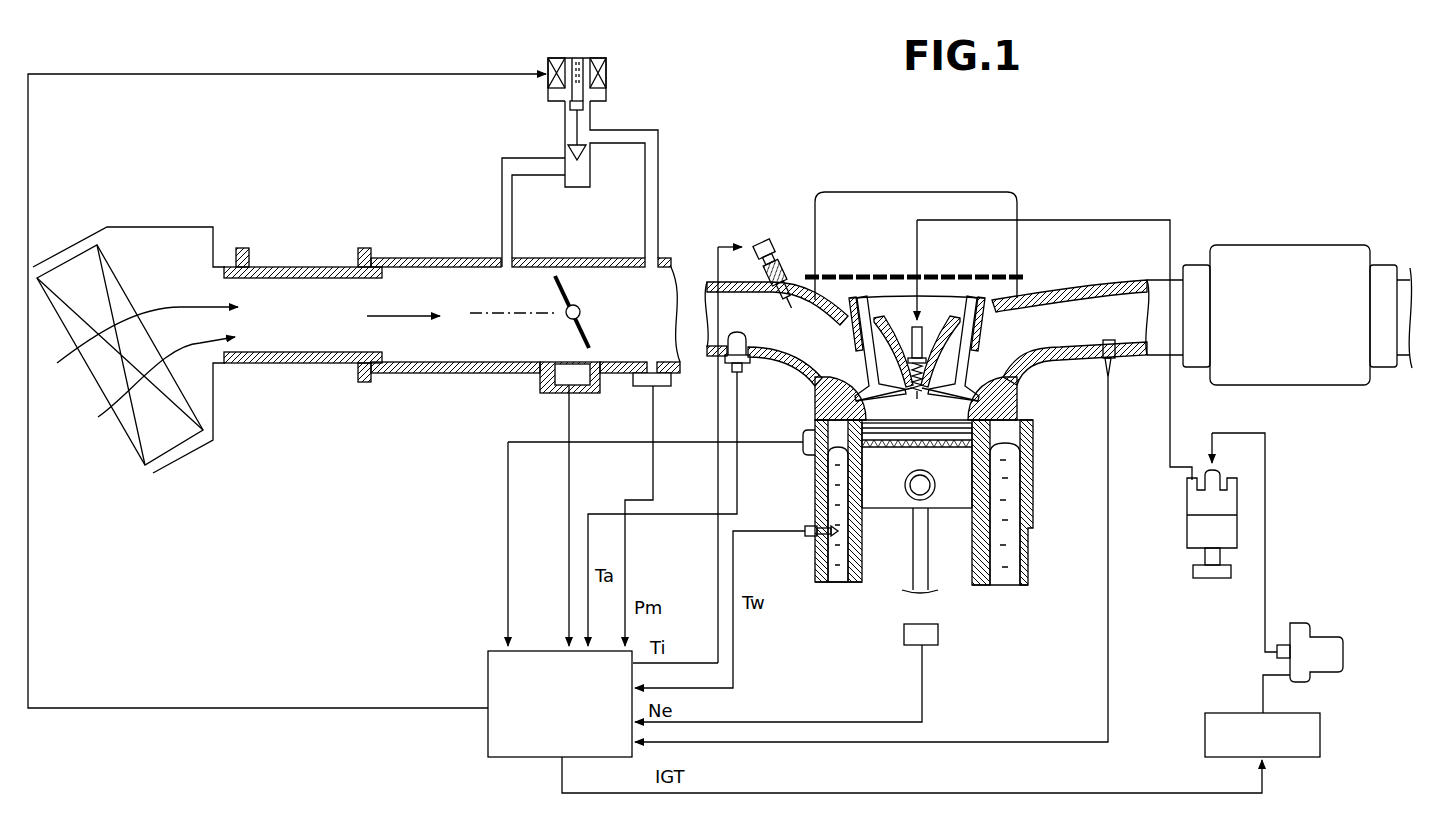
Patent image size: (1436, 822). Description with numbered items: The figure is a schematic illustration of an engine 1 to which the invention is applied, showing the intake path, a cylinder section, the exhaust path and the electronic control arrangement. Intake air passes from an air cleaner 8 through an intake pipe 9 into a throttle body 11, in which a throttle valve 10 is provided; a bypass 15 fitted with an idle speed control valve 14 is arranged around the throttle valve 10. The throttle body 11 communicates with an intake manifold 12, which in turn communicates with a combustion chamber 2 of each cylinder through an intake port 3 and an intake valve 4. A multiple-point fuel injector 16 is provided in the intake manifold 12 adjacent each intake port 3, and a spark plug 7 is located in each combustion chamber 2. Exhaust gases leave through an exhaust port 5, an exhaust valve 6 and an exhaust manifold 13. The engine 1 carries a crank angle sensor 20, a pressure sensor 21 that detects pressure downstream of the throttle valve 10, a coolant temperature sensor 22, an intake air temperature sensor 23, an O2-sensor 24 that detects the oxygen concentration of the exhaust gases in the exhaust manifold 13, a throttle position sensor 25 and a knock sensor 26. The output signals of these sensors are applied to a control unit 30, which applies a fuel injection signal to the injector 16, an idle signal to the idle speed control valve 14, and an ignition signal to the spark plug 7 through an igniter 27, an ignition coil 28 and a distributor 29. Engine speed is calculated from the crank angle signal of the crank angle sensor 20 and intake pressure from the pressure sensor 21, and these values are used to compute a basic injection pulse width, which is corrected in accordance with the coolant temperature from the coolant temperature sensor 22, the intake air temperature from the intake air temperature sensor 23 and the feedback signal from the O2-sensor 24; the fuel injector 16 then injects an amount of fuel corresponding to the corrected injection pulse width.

The engine 1 is at (1037, 483).
The combustion chamber 2 is at (1020, 412).
The intake port 3 is at (818, 407).
The intake valve 4 is at (858, 358).
The exhaust port 5 is at (1013, 383).
The exhaust valve 6 is at (973, 358).
The spark plug 7 is at (910, 340).
The air cleaner 8 is at (190, 455).
The intake pipe 9 is at (300, 363).
The throttle valve 10 is at (568, 290).
The throttle body 11 is at (615, 373).
The intake manifold 12 is at (771, 360).
The exhaust manifold 13 is at (1067, 283).
The idle speed control (ISC) valve 14 is at (590, 120).
The bypass 15 is at (658, 157).
The multiple-point fuel injector 16 is at (766, 242).
The crank angle sensor 20 is at (925, 633).
The pressure sensor 21 is at (660, 387).
The coolant temperature sensor 22 is at (805, 528).
The intake air temperature sensor 23 is at (742, 372).
The O2-sensor 24 is at (1115, 356).
The throttle position sensor 25 is at (540, 388).
The knock sensor 26 is at (803, 457).
The igniter 27 is at (1225, 717).
The ignition coil 28 is at (1328, 637).
The distributor 29 is at (1185, 532).
The control unit 30 is at (515, 752).